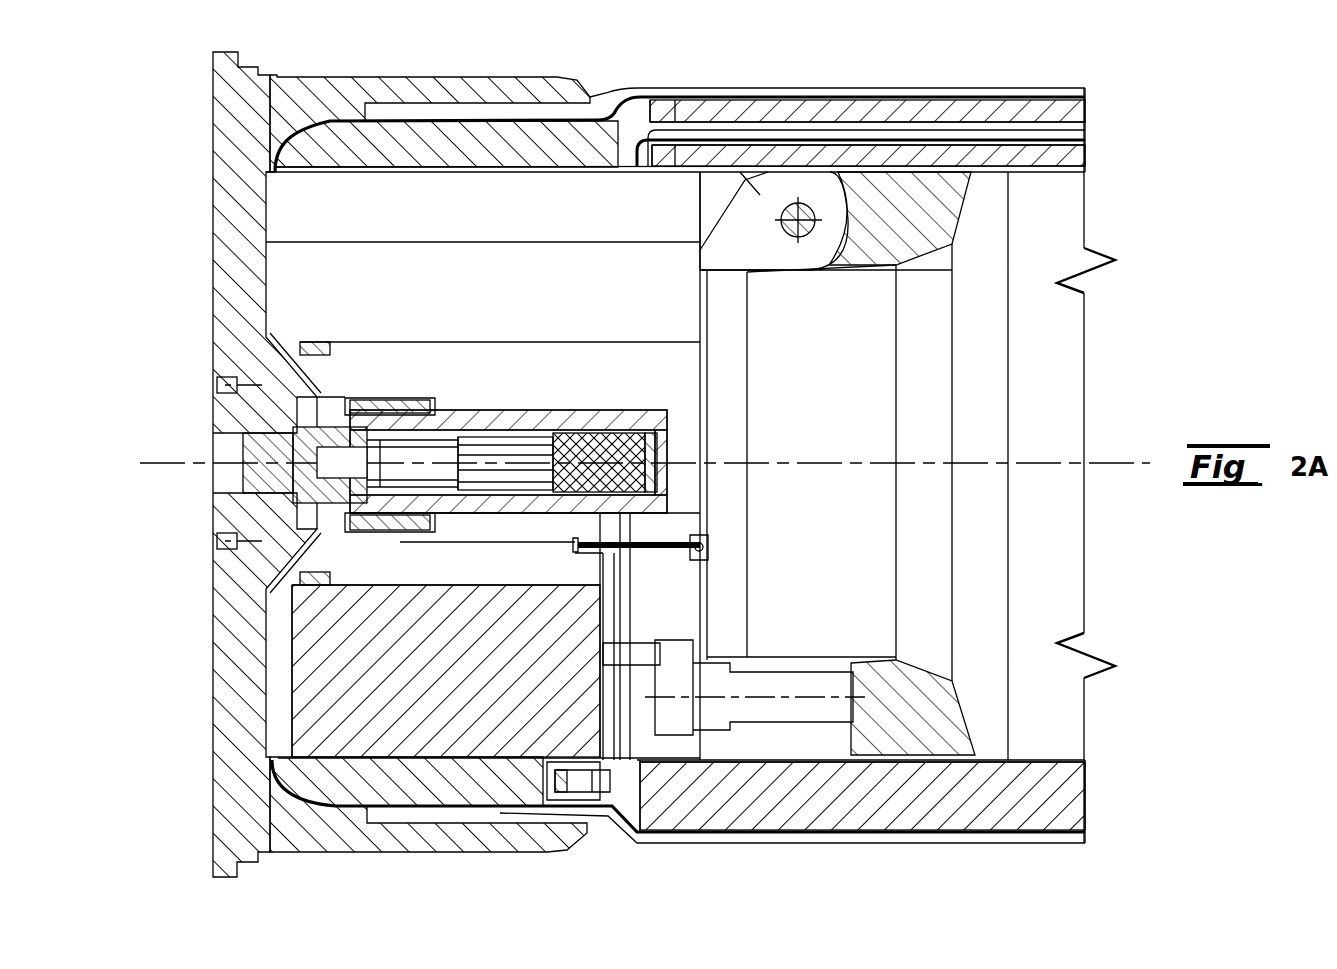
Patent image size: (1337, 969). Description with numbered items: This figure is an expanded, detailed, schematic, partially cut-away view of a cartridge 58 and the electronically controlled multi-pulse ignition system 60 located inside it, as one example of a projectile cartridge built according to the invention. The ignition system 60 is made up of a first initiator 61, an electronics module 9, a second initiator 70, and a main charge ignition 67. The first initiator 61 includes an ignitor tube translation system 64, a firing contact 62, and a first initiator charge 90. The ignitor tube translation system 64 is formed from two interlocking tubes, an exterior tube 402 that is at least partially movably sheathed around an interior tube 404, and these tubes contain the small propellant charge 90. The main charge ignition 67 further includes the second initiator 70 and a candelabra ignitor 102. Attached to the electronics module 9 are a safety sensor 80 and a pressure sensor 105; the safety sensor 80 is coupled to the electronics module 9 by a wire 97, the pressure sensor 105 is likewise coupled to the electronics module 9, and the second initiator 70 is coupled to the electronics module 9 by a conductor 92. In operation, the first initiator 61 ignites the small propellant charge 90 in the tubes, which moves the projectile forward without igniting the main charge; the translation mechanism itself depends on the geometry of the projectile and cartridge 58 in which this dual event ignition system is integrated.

The electronics module 9 is at (412, 480).
The cartridge 58 is at (720, 97).
The ignition system 60 is at (215, 385).
The first initiator 61 is at (485, 488).
The firing contact 62 is at (214, 440).
The ignitor tube translation system 64 is at (605, 420).
The main charge ignition 67 is at (882, 130).
The second initiator 70 is at (598, 822).
The safety sensor 80 is at (705, 545).
The first initiator charge 90 is at (643, 468).
The conductor 92 is at (287, 578).
The wire 97 is at (538, 548).
The candelabra ignitor 102 is at (1085, 128).
The pressure sensor 105 is at (355, 455).
The exterior tube 402 is at (575, 428).
The interior tube 404 is at (530, 433).